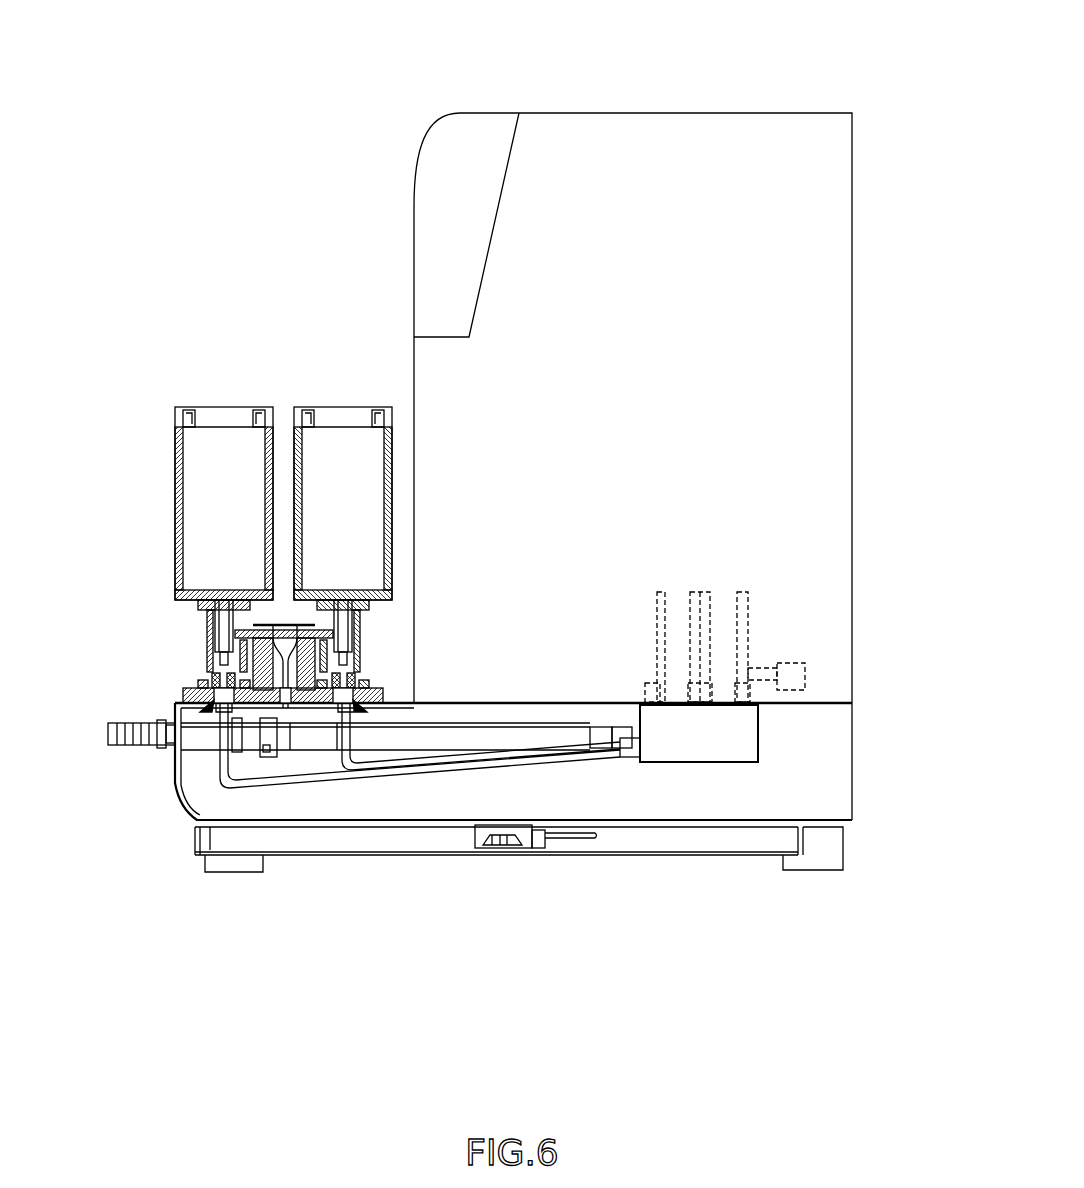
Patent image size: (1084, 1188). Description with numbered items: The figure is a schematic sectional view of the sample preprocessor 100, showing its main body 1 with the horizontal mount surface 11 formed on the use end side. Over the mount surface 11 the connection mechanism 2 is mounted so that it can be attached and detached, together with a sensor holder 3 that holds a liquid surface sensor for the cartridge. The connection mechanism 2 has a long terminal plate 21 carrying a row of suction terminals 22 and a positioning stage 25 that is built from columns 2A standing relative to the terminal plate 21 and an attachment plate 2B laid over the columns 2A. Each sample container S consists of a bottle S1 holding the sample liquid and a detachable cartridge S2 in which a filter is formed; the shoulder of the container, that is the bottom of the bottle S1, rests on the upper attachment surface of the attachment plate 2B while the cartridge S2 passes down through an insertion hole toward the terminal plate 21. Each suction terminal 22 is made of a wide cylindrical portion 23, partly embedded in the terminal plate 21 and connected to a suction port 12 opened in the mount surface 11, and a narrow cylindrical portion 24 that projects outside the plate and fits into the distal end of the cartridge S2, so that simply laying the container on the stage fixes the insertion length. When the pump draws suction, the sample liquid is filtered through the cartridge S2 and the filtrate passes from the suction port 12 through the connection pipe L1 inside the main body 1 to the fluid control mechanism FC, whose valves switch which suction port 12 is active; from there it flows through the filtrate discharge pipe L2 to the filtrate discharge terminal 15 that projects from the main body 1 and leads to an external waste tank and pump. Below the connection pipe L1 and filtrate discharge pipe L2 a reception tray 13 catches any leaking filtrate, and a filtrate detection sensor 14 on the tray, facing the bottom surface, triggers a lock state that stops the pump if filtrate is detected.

The sample preprocessor 100 is at (833, 55).
The main body 1 is at (655, 113).
The mount surface 11 is at (377, 690).
The suction port 12 is at (210, 715).
The reception tray 13 is at (197, 838).
The filtrate detection sensor 14 is at (505, 848).
The filtrate discharge terminal 15 is at (143, 745).
The connection mechanism 2 is at (107, 638).
The terminal plate 21 is at (190, 690).
The suction terminal 22 is at (150, 677).
The wide cylindrical portion 23 is at (212, 678).
The narrow cylindrical portion 24 is at (205, 642).
The positioning stage 25 is at (133, 597).
The column 2A is at (212, 617).
The attachment plate 2B is at (197, 607).
The sensor holder 3 is at (303, 618).
The sample container S is at (127, 397).
The bottle S1 is at (175, 463).
The cartridge S2 is at (284, 656).
The connection pipe L1 is at (292, 785).
The filtrate discharge pipe L2 is at (443, 722).
The fluid control mechanism FC is at (760, 732).